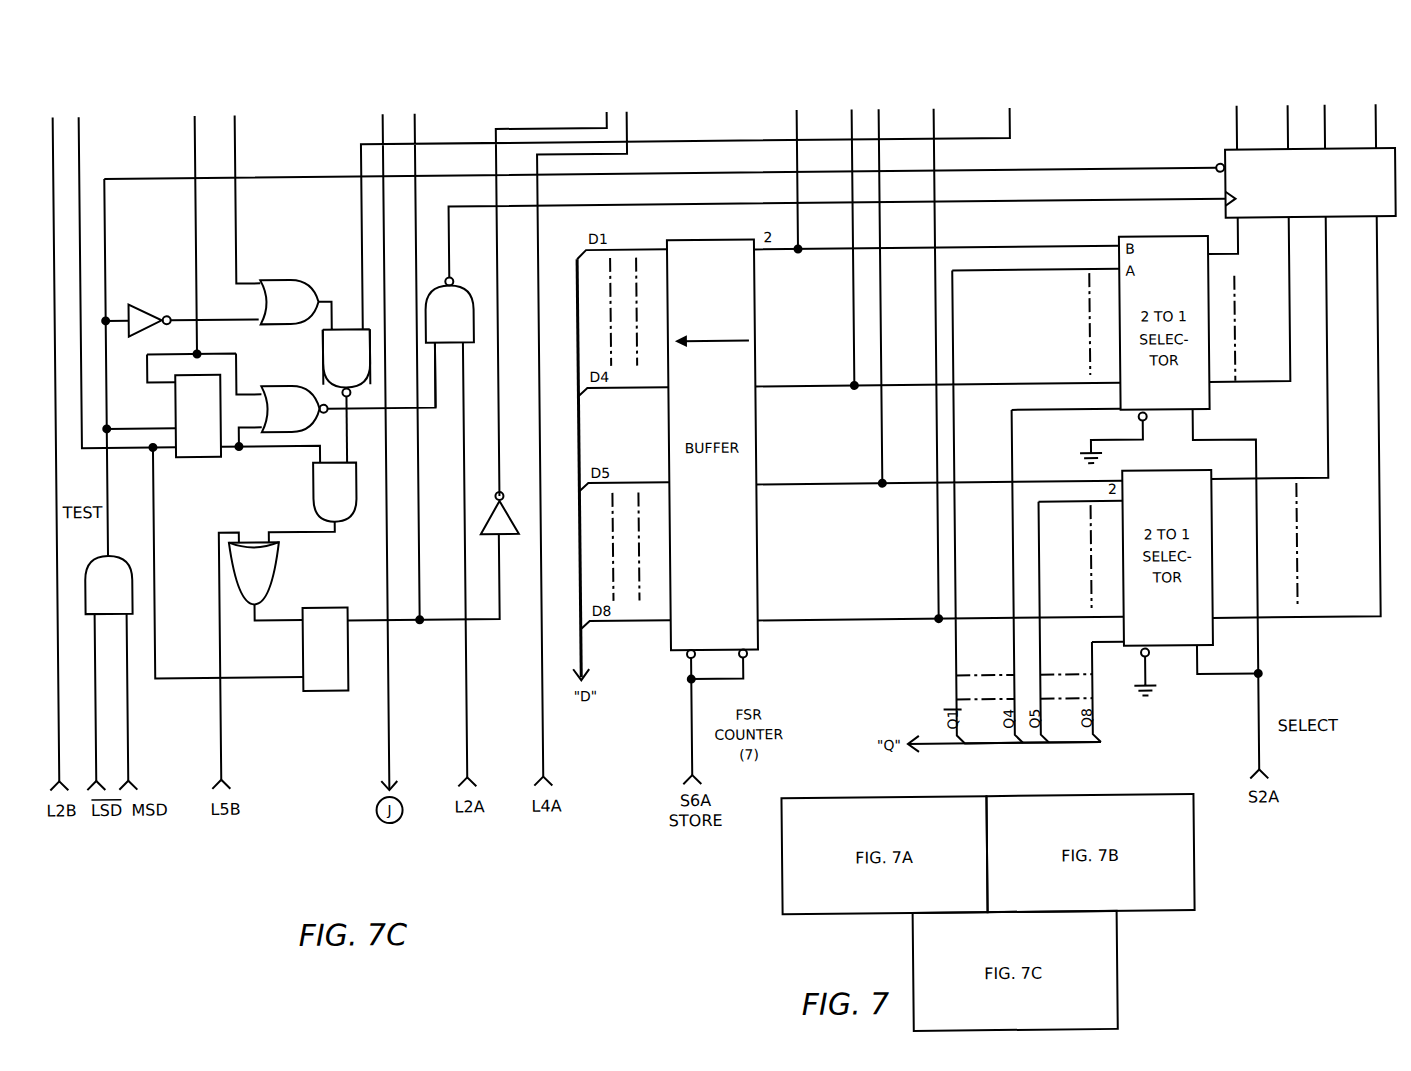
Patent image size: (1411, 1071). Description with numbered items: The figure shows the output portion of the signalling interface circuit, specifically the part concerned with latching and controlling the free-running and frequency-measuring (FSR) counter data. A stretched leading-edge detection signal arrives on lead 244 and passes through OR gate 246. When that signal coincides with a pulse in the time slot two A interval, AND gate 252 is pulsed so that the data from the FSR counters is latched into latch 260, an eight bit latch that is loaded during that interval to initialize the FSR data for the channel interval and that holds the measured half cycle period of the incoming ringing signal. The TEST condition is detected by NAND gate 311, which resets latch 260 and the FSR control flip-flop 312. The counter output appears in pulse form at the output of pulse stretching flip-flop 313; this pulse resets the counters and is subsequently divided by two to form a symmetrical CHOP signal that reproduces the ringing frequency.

The lead 244 is at (196, 238).
The OR gate 246 is at (277, 382).
The AND gate 252 is at (458, 283).
The latch 260 is at (1310, 183).
The NAND gate 311 is at (133, 582).
The FSR control flip-flop 312 is at (205, 455).
The pulse stretching flip-flop 313 is at (323, 604).